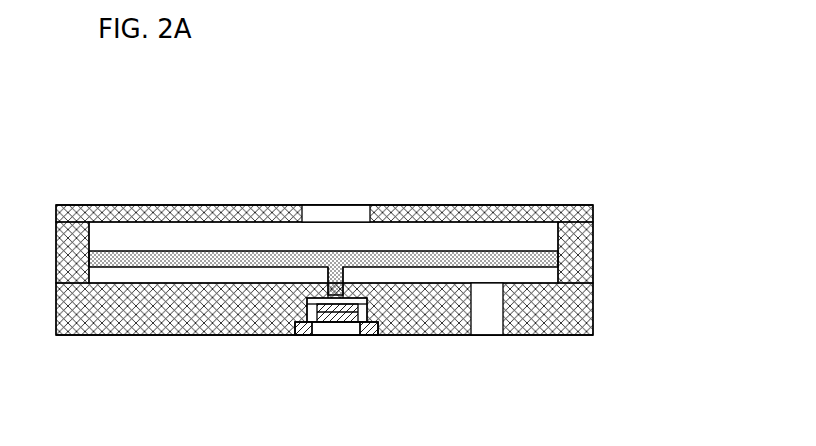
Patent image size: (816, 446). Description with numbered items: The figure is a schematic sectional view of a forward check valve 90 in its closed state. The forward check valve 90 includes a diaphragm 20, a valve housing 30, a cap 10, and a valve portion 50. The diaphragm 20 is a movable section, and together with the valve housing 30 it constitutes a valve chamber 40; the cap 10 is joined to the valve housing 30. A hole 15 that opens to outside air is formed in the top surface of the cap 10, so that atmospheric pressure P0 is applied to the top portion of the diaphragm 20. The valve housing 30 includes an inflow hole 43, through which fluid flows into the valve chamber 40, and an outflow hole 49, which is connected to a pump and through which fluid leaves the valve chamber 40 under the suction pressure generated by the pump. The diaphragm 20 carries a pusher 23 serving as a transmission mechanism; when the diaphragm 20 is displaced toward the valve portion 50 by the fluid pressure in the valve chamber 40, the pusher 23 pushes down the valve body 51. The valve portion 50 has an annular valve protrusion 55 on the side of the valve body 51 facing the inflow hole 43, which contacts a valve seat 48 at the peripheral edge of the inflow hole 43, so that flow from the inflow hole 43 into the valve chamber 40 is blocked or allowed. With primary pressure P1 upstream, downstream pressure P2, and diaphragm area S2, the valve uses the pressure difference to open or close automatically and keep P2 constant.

The cap 10 is at (357, 273).
The hole 15 is at (353, 213).
The diaphragm 20 is at (122, 257).
The pusher 23 is at (327, 278).
The valve housing 30 is at (79, 337).
The valve chamber 40 is at (550, 276).
The inflow hole 43 is at (348, 290).
The valve seat 48 is at (306, 304).
The outflow hole 49 is at (487, 300).
The valve portion 50 is at (304, 339).
The valve body 51 is at (356, 306).
The valve protrusion 55 is at (316, 335).
The forward check valve 90 is at (624, 99).
The area of the diaphragm S2 is at (170, 248).
The atmospheric pressure P0 is at (447, 244).
The primary pressure P1 is at (336, 172).
The downstream pressure P2 is at (447, 278).